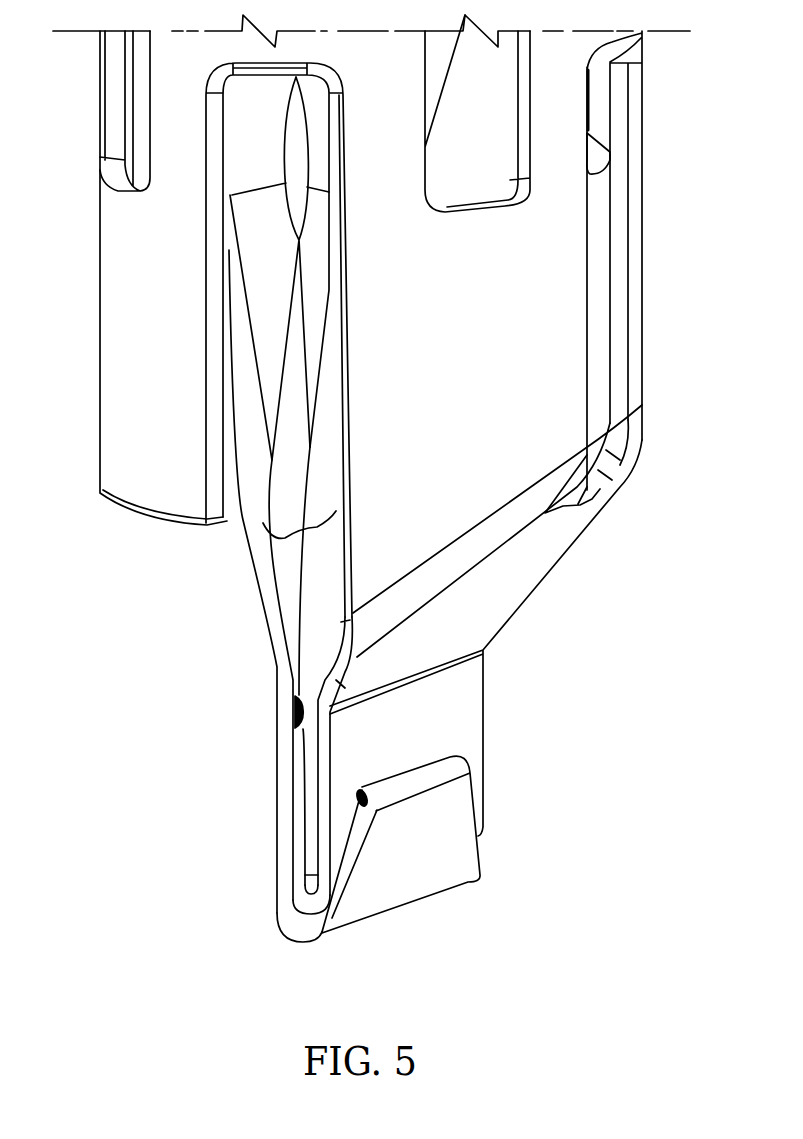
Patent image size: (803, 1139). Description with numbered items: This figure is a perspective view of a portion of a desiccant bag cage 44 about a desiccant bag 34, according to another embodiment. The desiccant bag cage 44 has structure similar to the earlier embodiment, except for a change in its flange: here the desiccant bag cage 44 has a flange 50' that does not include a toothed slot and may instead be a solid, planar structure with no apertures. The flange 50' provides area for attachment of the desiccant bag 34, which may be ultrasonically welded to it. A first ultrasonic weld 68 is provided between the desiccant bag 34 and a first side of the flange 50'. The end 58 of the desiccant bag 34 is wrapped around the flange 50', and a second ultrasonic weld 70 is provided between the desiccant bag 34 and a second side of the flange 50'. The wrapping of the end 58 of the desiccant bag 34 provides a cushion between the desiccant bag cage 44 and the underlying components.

The desiccant bag 34 is at (267, 300).
The desiccant bag cage 44 is at (537, 353).
The flange 50' is at (486, 620).
The end of the desiccant bag 58 is at (452, 857).
The first ultrasonic weld 68 is at (294, 712).
The second ultrasonic weld 70 is at (357, 798).